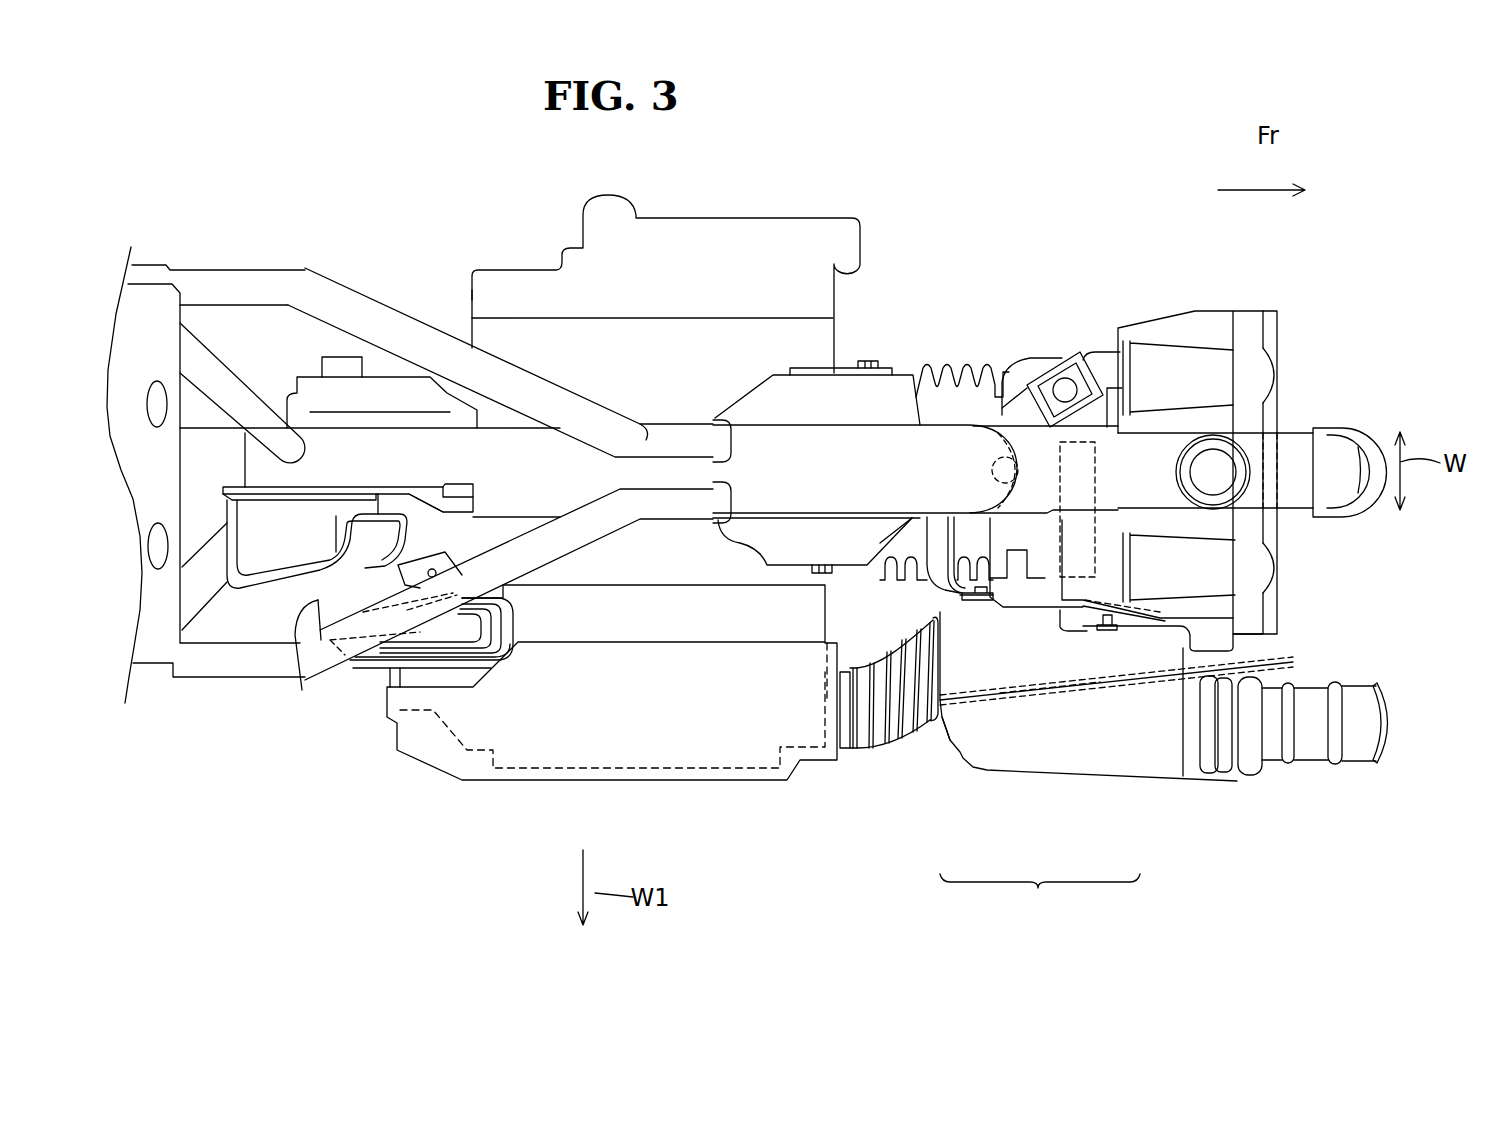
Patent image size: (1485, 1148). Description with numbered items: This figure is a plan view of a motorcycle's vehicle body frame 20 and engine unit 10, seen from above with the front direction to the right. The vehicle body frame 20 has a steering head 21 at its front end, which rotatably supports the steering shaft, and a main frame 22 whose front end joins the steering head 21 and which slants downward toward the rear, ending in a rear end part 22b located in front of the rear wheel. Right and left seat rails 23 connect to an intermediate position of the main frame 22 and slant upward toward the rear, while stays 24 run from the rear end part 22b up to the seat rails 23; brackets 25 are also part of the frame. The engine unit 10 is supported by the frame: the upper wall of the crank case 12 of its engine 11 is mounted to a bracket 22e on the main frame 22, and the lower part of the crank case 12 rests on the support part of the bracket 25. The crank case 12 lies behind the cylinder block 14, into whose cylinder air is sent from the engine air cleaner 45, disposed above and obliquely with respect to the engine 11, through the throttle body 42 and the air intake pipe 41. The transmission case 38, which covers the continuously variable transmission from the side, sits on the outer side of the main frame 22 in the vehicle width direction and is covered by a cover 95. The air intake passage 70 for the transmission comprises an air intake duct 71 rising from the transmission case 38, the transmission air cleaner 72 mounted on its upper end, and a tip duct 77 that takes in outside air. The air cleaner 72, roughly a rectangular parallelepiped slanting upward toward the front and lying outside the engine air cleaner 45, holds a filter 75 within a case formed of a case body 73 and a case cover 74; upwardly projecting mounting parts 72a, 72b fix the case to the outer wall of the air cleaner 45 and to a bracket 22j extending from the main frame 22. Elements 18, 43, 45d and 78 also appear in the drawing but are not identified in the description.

The engine unit 10 is at (830, 190).
The engine 11 is at (746, 203).
The crank case 12 is at (470, 330).
The cylinder block 14 is at (930, 365).
The stopper 18 is at (1016, 540).
The vehicle body frame 20 is at (524, 352).
The steering head 21 is at (1295, 440).
The main frame 22 is at (948, 440).
The rear end part 22b is at (262, 470).
The bracket 22e is at (843, 382).
The bracket 22j is at (935, 543).
The seat rail 23 is at (252, 285).
The stay 24 is at (228, 372).
The bracket 25 is at (385, 390).
The transmission case 38 is at (745, 780).
The air intake pipe 41 is at (1022, 402).
The throttle body 42 is at (1068, 355).
The joint yoke 43 is at (1103, 360).
The air cleaner 45 is at (1170, 306).
The gear housing portion 45d is at (1150, 545).
The air intake passage 70 is at (1040, 894).
The air intake duct 71 is at (885, 740).
The air cleaner 72 is at (1036, 791).
The mounting part 72a is at (1098, 638).
The mounting part 72b is at (990, 612).
The case body 73 is at (935, 614).
The case cover 74 is at (973, 762).
The filter 75 is at (1060, 695).
The tip duct 77 is at (1240, 765).
The duct bracket 78 is at (305, 665).
The cover 95 is at (685, 775).